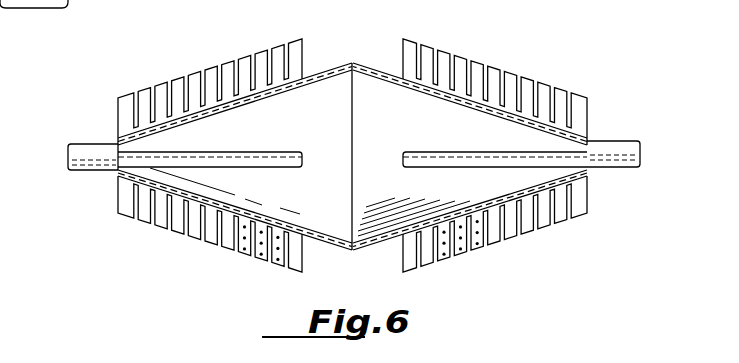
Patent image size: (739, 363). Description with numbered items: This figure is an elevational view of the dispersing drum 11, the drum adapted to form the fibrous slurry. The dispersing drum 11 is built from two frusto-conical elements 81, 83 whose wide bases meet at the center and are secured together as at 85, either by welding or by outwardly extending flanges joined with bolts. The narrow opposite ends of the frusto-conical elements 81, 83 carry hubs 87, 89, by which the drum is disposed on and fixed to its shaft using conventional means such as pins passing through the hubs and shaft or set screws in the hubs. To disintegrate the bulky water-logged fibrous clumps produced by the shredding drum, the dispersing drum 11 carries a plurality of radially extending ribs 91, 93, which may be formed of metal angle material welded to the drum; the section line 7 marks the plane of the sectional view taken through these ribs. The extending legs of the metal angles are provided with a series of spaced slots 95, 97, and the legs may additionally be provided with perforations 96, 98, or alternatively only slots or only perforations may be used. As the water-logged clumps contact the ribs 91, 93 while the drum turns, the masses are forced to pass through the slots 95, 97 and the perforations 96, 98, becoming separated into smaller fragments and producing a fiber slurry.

The section line 7- 7 is at (238, 125).
The dispersing drum 11 is at (216, 259).
The frusto-conical element 81 is at (324, 62).
The frusto-conical element 83 is at (376, 62).
The base joint 85 is at (353, 62).
The hub 87 is at (98, 153).
The hub 89 is at (605, 147).
The radially extending rib 91 is at (248, 72).
The radially extending rib 93 is at (474, 67).
The slots 95 is at (187, 97).
The perforations 96 is at (252, 261).
The slots 97 is at (553, 88).
The perforations 98 is at (465, 257).